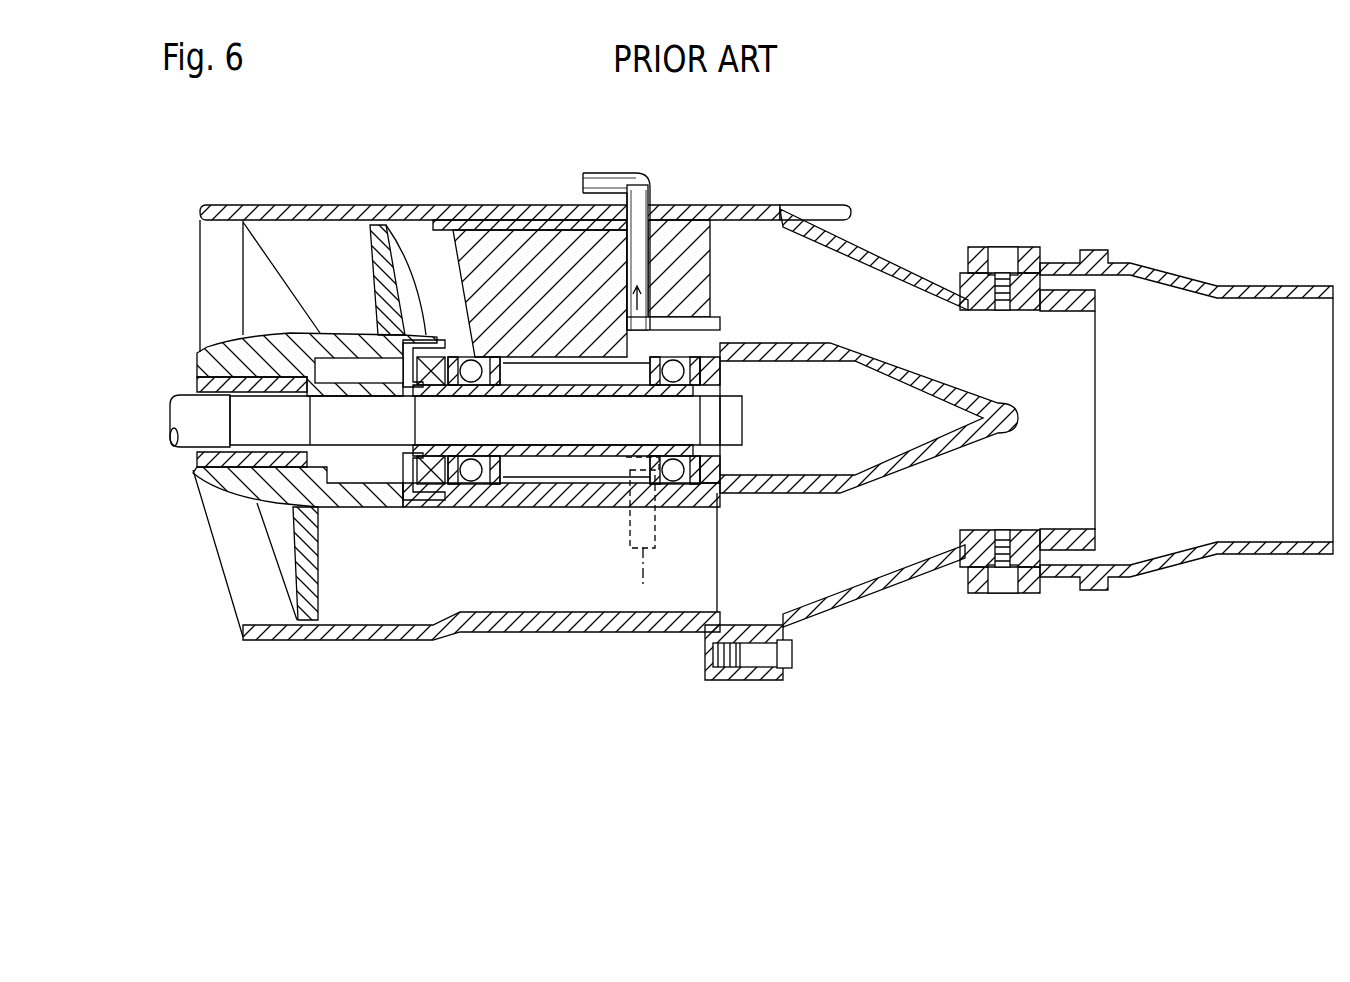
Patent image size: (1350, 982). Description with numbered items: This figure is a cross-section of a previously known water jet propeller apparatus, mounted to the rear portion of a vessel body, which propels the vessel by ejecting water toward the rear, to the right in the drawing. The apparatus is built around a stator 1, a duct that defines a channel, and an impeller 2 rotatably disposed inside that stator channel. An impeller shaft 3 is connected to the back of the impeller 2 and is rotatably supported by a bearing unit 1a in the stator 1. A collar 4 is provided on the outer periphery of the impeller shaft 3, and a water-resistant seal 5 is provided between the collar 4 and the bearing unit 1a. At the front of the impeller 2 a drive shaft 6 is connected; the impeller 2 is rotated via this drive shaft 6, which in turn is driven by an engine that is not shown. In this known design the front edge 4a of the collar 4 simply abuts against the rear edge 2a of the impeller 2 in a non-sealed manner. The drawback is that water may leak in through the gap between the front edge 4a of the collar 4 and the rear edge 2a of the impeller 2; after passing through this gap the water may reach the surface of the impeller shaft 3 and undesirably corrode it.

The stator 1 is at (335, 637).
The bearing unit 1a is at (545, 492).
The impeller 2 is at (393, 540).
The rear edge of the impeller 2a is at (370, 340).
The impeller shaft 3 is at (722, 426).
The collar 4 is at (423, 448).
The front edge of the collar 4a is at (370, 340).
The water-resistant seal 5 is at (440, 510).
The drive shaft 6 is at (188, 422).